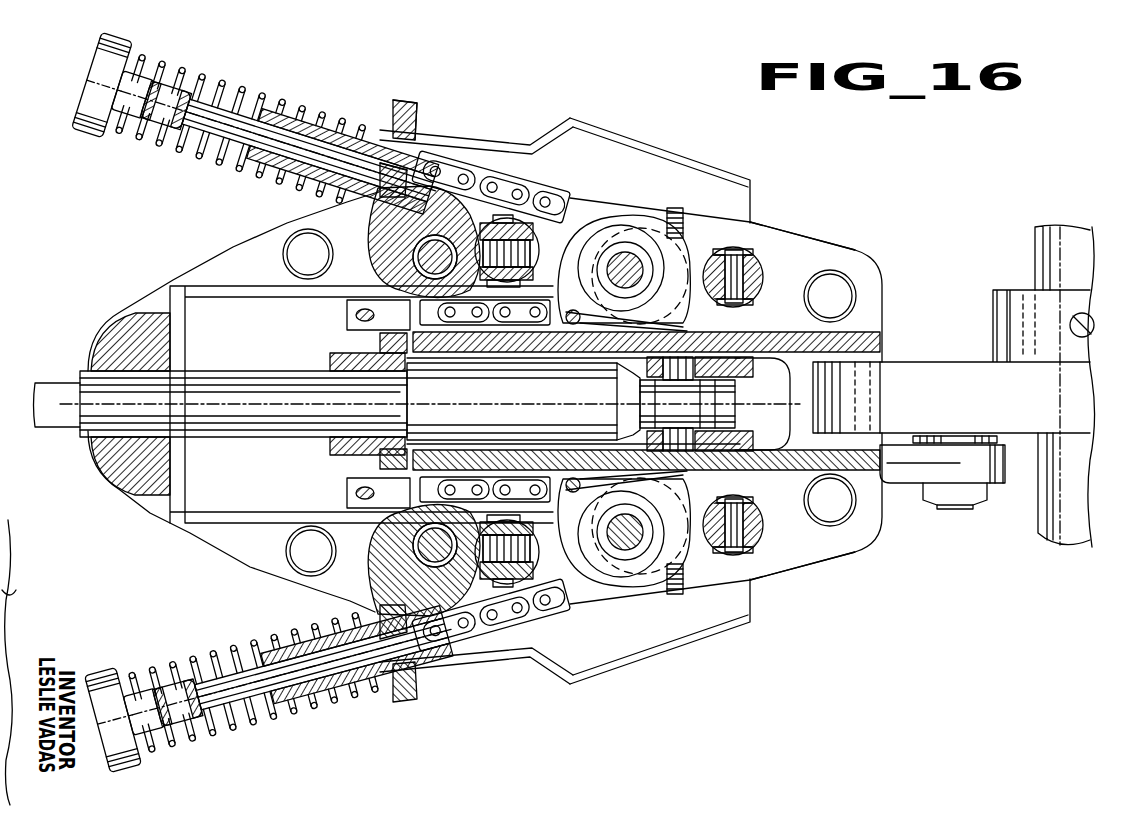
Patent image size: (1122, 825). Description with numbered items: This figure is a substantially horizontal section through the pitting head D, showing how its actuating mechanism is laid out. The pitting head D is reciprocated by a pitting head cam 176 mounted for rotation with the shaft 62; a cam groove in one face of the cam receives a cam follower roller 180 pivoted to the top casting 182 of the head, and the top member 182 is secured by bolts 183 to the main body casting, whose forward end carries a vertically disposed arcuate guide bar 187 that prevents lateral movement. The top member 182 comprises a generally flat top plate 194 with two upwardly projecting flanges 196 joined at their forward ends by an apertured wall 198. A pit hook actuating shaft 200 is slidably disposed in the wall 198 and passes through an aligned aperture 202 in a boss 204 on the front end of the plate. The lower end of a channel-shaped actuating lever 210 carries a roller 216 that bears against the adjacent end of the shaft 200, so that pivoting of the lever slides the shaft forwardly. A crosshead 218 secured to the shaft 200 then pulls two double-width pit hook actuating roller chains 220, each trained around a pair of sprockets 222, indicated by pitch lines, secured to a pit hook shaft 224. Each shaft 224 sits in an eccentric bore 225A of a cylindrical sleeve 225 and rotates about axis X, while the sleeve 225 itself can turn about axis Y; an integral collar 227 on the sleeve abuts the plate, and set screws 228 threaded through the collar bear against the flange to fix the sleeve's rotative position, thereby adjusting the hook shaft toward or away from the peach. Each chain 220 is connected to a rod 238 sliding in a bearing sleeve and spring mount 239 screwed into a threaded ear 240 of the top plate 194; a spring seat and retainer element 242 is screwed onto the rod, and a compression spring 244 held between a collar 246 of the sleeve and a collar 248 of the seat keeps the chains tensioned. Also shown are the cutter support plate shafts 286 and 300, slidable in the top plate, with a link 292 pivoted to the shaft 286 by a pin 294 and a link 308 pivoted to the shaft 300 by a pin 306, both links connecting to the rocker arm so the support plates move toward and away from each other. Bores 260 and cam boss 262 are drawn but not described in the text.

The shaft 62 is at (1048, 238).
The pitting head cam 176 is at (1030, 404).
The cam follower roller 180 is at (948, 445).
The top casting 182 is at (236, 250).
The bolts 183 is at (292, 262).
The arcuate guide bar 187 is at (62, 414).
The top plate 194 is at (278, 327).
The flanges 196 is at (858, 440).
The apertured wall 198 is at (382, 466).
The pit hook actuating shaft 200 is at (316, 414).
The aperture 202 is at (140, 385).
The boss 204 is at (158, 347).
The actuating lever 210 is at (780, 432).
The roller 216 is at (700, 411).
The crosshead 218 is at (332, 445).
The pit hook actuating roller chains 220 is at (558, 222).
The sprockets 222 is at (612, 250).
The pit hook shaft 224 is at (625, 260).
The cylindrical sleeve 225 is at (678, 320).
The eccentric bore 225A is at (686, 256).
The collar 227 is at (748, 222).
The set screw 228 is at (688, 205).
The rod 238 is at (215, 100).
The bearing sleeve and spring mount 239 is at (292, 110).
The threaded ear 240 is at (432, 130).
The spring seat and spring retainer element 242 is at (130, 72).
The compression spring 244 is at (183, 92).
The collar 246 is at (410, 116).
The collar 248 is at (88, 72).
The pivot hole 260 is at (410, 264).
The cam boss 262 is at (478, 235).
The shaft 286 is at (762, 280).
The link 292 is at (748, 272).
The pin 294 is at (760, 266).
The shaft 300 is at (512, 248).
The pin 306 is at (510, 228).
The link 308 is at (500, 218).
The pitting head D is at (760, 204).